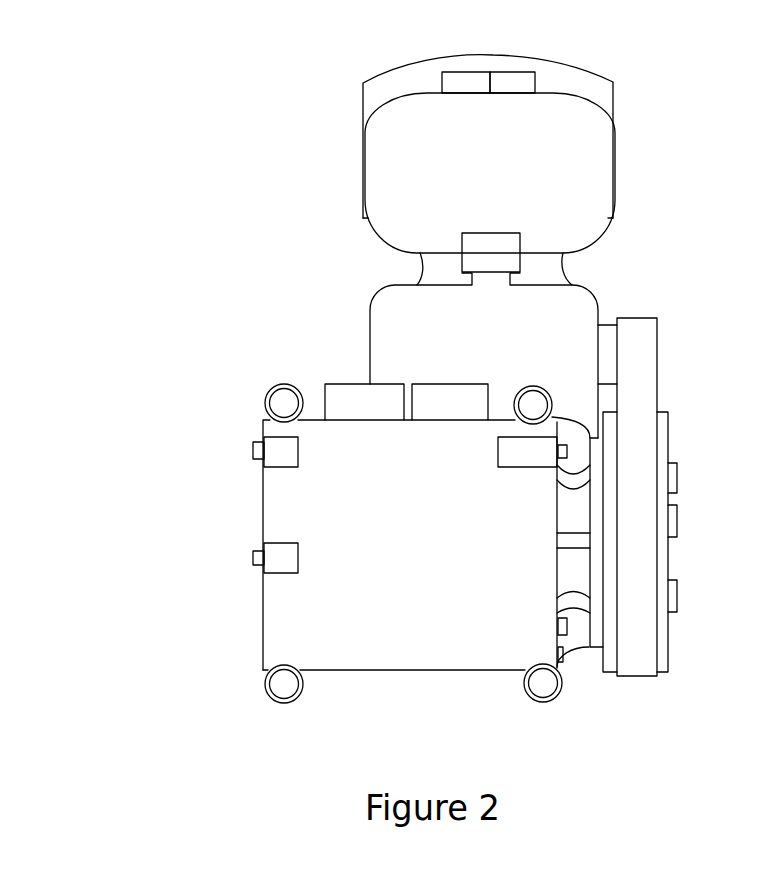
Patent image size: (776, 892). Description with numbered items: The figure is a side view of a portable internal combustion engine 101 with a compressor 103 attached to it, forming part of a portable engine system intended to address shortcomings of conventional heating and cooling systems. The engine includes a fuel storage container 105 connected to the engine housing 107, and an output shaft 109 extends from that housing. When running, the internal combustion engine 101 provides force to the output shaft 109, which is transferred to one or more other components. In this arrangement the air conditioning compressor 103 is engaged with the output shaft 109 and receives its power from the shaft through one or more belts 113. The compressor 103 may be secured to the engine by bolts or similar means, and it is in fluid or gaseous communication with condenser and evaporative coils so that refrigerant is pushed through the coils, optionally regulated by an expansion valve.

The portable internal combustion engine 101 is at (226, 96).
The compressor 103 is at (187, 358).
The fuel storage container 105 is at (615, 155).
The engine housing 107 is at (370, 333).
The output shaft 109 is at (607, 318).
The belt 113 is at (657, 385).